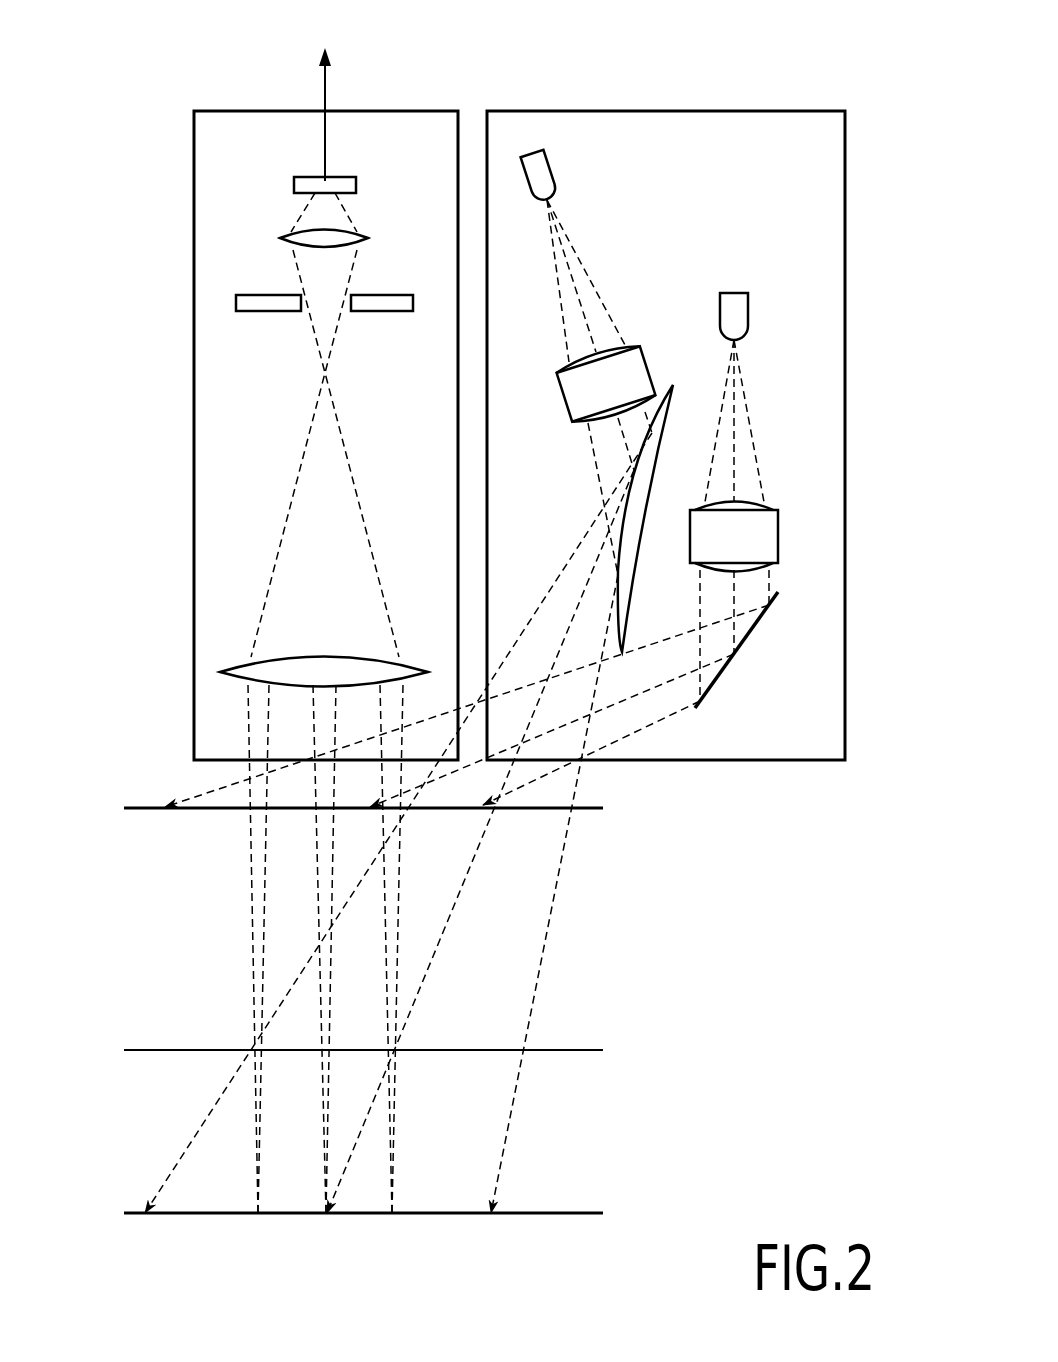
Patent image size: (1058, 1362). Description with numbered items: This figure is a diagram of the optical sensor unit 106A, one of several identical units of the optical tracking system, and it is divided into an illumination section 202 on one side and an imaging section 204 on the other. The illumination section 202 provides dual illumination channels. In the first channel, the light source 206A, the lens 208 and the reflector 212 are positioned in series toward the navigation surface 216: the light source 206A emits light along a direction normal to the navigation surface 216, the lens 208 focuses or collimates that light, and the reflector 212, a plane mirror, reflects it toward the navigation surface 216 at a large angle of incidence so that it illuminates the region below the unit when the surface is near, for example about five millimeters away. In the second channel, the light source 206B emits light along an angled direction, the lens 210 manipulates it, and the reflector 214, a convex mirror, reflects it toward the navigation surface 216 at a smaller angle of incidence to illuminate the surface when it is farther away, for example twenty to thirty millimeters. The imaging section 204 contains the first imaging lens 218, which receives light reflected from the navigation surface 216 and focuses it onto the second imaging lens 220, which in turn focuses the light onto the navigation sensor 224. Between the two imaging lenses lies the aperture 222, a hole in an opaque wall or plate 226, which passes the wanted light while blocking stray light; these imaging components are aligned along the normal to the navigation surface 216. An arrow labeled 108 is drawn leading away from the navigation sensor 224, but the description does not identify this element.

The optical sensor unit 106A is at (793, 40).
The output light / light path 108 is at (326, 97).
The illumination section 202 is at (576, 111).
The imaging section 204 is at (287, 111).
The light source 206A is at (737, 293).
The light source 206B is at (550, 165).
The lens 208 is at (778, 520).
The lens 210 is at (559, 403).
The reflector 212 is at (757, 630).
The reflector 214 is at (672, 410).
The navigation surface 216 is at (593, 810).
The first imaging lens 218 is at (325, 657).
The second imaging lens 220 is at (365, 233).
The aperture 222 is at (323, 302).
The navigation sensor 224 is at (343, 177).
The opaque wall or plate 226 is at (391, 311).